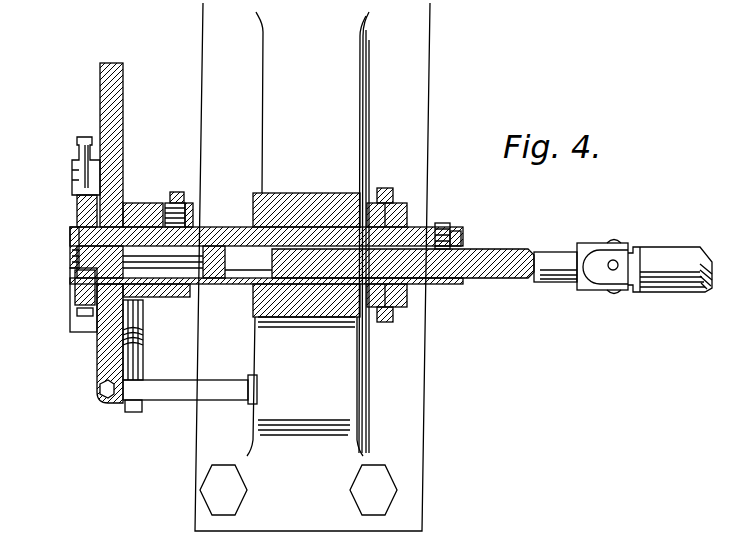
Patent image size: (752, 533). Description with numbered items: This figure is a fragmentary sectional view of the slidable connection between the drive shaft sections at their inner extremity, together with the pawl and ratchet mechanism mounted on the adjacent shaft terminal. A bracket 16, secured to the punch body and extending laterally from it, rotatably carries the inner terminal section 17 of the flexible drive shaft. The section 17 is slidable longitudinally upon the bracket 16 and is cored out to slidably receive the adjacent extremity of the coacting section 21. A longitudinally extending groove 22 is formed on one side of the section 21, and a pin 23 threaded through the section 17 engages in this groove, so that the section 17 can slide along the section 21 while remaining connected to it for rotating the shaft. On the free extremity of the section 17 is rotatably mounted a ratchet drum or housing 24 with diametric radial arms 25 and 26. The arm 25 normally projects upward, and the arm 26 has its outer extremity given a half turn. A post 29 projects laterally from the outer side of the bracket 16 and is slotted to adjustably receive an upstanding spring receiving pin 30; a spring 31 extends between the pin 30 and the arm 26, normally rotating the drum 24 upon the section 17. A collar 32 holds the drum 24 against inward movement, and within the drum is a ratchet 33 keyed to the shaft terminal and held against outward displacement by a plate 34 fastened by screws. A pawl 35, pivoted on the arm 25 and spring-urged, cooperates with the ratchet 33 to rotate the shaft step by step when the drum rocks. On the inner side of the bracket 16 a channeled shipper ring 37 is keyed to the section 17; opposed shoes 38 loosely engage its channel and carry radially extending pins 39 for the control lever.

The bracket 16 is at (418, 92).
The inner terminal section of the flexible drive shaft 17 is at (213, 226).
The coacting section of the shaft 21 is at (553, 255).
The longitudinally extending groove 22 is at (505, 249).
The pin 23 is at (450, 228).
The ratchet drum or housing 24 is at (118, 187).
The arm of the ratchet drum 25 is at (113, 113).
The arm of the ratchet drum 26 is at (100, 363).
The post 29 is at (178, 402).
The spring receiving pin 30 is at (134, 367).
The spring 31 is at (128, 333).
The collar 32 is at (192, 204).
The ratchet 33 is at (80, 292).
The plate 34 is at (70, 234).
The pawl 35 is at (82, 158).
The channeled shipper ring 37 is at (408, 212).
The shoes 38 is at (385, 205).
The radially extending pins 39 is at (387, 190).